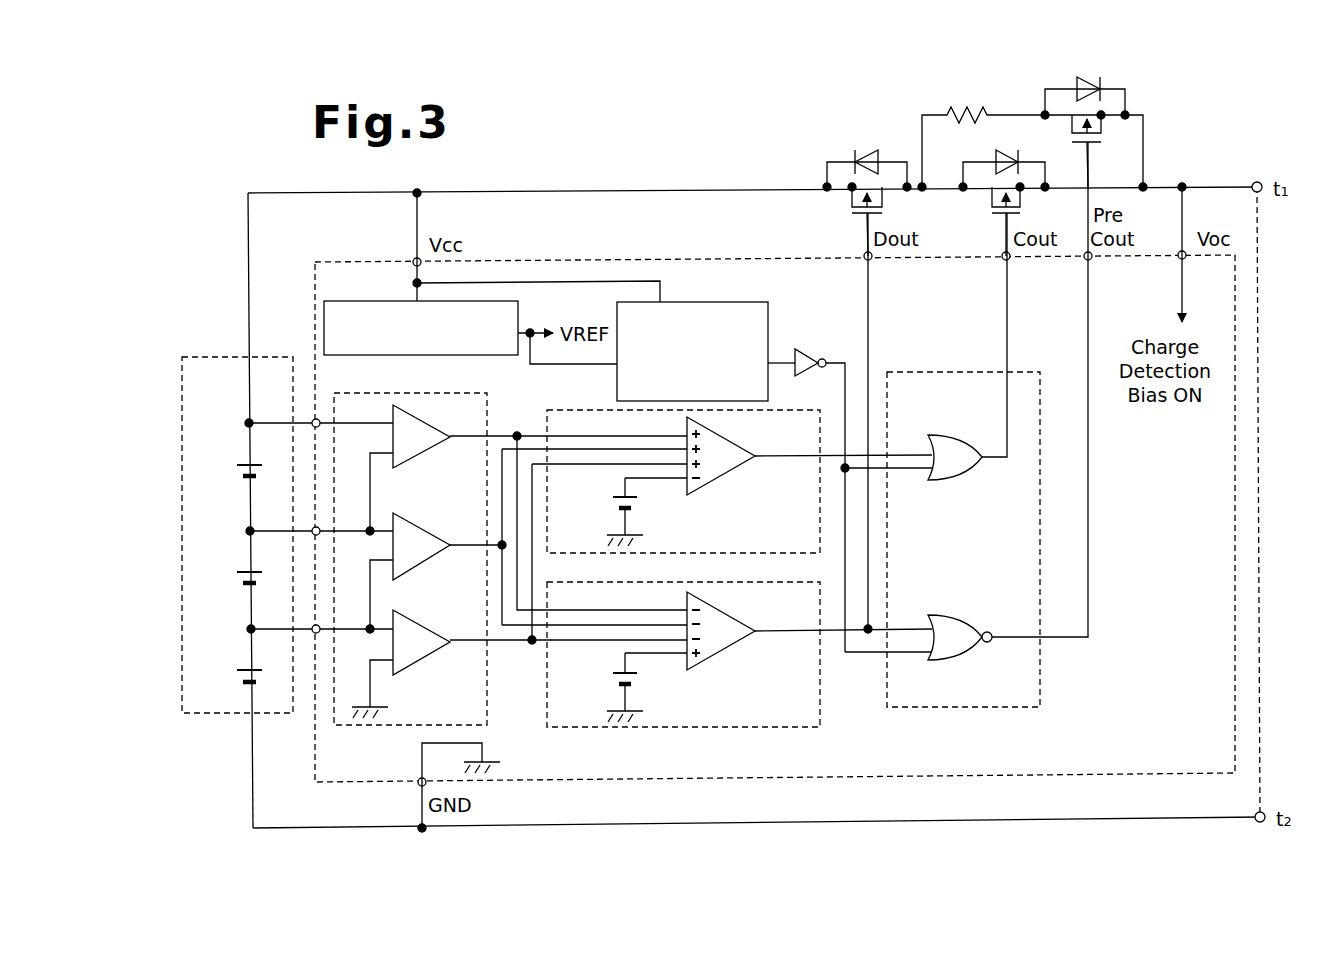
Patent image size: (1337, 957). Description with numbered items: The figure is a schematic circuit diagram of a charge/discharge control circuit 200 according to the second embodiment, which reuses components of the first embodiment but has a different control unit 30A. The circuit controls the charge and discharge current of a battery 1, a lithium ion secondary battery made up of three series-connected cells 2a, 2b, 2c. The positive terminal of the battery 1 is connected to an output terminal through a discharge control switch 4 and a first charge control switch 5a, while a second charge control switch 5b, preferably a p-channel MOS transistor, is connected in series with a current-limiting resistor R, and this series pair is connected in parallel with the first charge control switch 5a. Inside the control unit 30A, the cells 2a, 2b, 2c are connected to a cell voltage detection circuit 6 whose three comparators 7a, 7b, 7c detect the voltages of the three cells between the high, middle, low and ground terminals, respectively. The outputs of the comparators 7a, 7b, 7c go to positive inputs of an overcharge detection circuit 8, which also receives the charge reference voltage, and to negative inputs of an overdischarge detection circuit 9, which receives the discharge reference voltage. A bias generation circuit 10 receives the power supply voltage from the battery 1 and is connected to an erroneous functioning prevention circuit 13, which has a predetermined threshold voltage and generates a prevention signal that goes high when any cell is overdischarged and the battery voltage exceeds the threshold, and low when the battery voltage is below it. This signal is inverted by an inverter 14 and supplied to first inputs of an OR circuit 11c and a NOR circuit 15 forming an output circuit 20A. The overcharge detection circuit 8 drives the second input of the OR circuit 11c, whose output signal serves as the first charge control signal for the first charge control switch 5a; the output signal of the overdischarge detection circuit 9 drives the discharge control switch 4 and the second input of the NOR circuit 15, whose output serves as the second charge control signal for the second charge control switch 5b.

The battery 1 is at (226, 351).
The cell 2a is at (240, 459).
The cell 2b is at (240, 566).
The cell 2c is at (240, 664).
The discharge control switch 4 is at (852, 208).
The first charge control switch 5a is at (991, 207).
The second charge control switch 5b is at (1103, 134).
The cell voltage detection circuit 6 is at (489, 398).
The comparator 7a is at (418, 455).
The comparator 7b is at (418, 563).
The comparator 7c is at (418, 660).
The overcharge detection circuit 8 is at (598, 410).
The overdischarge detection circuit 9 is at (576, 738).
The bias generation circuit 10 is at (392, 356).
The OR circuit 11c is at (944, 434).
The erroneous functioning prevention circuit 13 is at (768, 385).
The inverter 14 is at (806, 349).
The NOR circuit 15 is at (957, 615).
The output circuit 20A is at (946, 370).
The control unit 30A is at (634, 257).
The charge/discharge control circuit 200 is at (1069, 834).
The resistor R is at (955, 110).